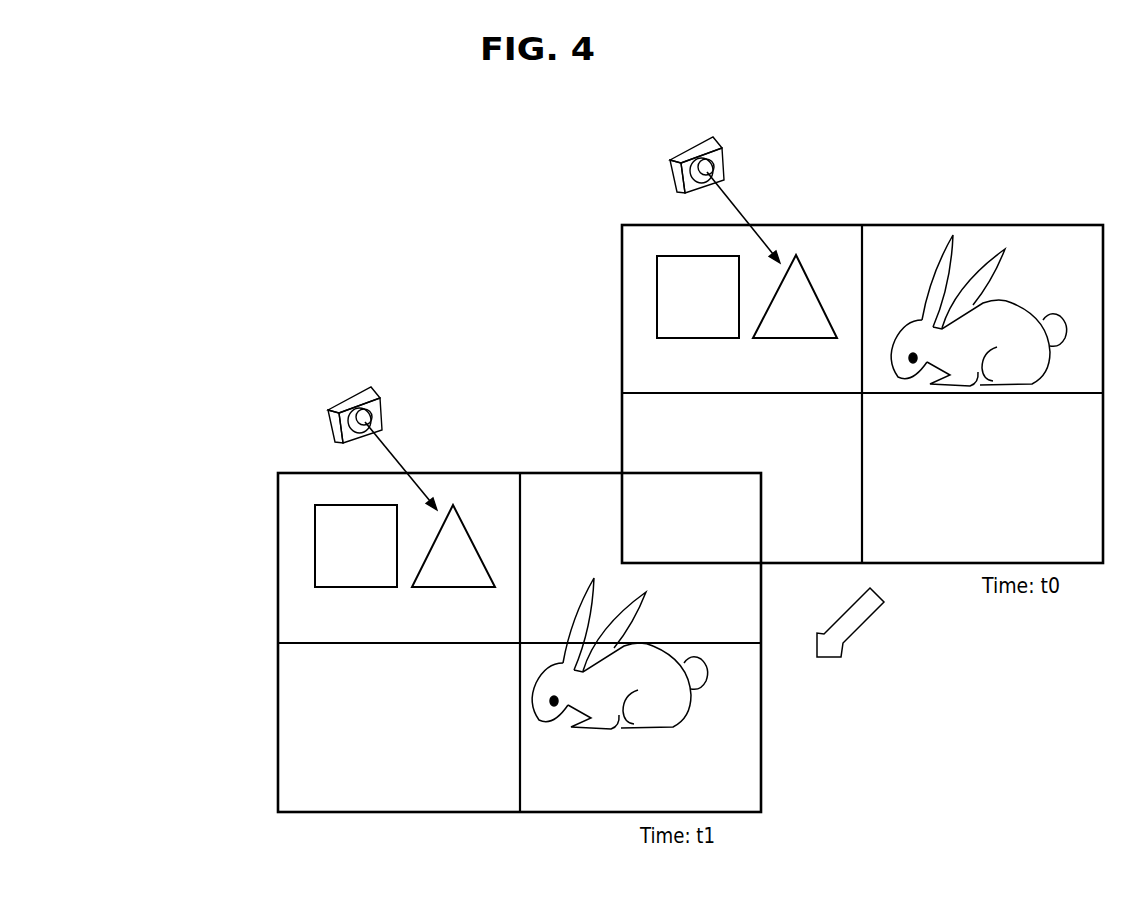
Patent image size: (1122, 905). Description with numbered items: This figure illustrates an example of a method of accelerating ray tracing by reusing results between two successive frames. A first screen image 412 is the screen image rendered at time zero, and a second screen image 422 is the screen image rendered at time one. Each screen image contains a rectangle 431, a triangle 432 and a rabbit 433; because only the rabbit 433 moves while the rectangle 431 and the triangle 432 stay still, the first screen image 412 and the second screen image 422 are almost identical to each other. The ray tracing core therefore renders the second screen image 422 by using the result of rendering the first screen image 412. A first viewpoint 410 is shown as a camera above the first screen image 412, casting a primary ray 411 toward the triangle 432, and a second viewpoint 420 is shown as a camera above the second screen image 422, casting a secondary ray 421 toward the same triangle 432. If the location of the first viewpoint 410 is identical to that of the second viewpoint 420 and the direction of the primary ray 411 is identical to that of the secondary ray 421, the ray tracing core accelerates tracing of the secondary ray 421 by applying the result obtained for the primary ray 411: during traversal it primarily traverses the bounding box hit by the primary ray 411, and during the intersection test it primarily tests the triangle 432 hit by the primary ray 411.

The first viewpoint 410 is at (686, 150).
The primary ray 411 is at (735, 205).
The first screen image 412 is at (621, 284).
The second viewpoint 420 is at (342, 399).
The secondary ray 421 is at (395, 455).
The second screen image 422 is at (278, 532).
The rectangle 431 is at (697, 338).
The triangle 432 is at (795, 338).
The rabbit 433 is at (977, 380).